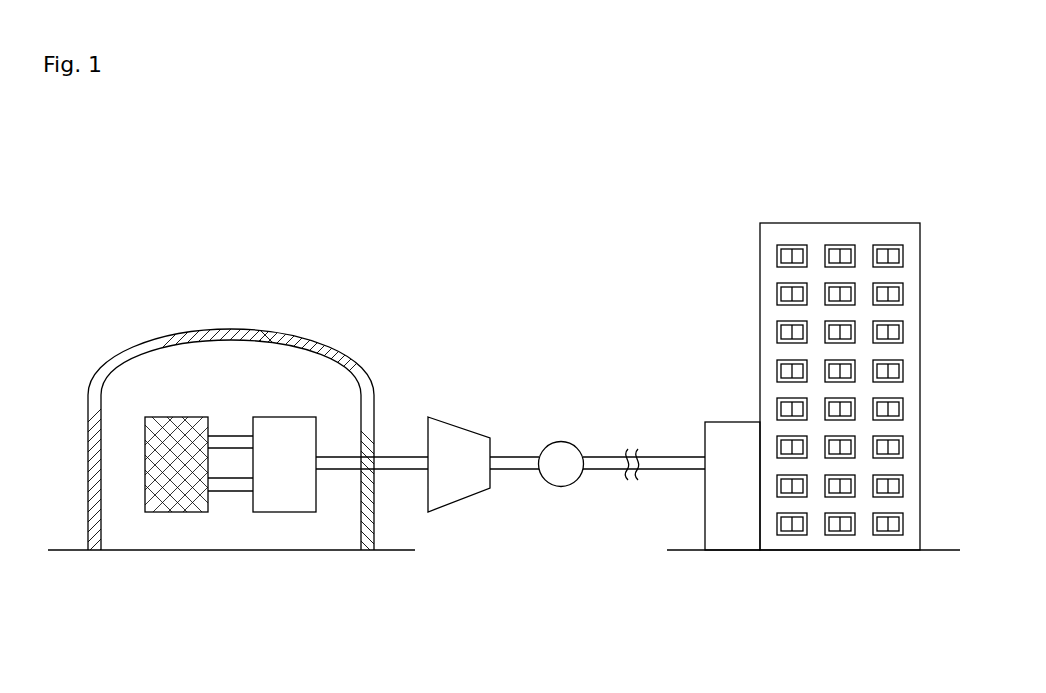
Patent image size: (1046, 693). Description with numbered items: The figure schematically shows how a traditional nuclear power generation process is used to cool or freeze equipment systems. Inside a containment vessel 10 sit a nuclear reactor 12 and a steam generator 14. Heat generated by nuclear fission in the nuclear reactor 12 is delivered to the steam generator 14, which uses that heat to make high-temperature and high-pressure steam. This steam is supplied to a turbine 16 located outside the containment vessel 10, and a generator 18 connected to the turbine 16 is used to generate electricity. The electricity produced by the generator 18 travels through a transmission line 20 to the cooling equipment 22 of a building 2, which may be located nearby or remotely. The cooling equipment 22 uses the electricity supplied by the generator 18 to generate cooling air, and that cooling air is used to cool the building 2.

The building 2 is at (887, 223).
The containment vessel 10 is at (229, 329).
The nuclear reactor 12 is at (178, 417).
The steam generator 14 is at (291, 417).
The turbine 16 is at (458, 427).
The generator 18 is at (563, 442).
The transmission line 20 is at (671, 456).
The cooling equipment 22 is at (729, 422).